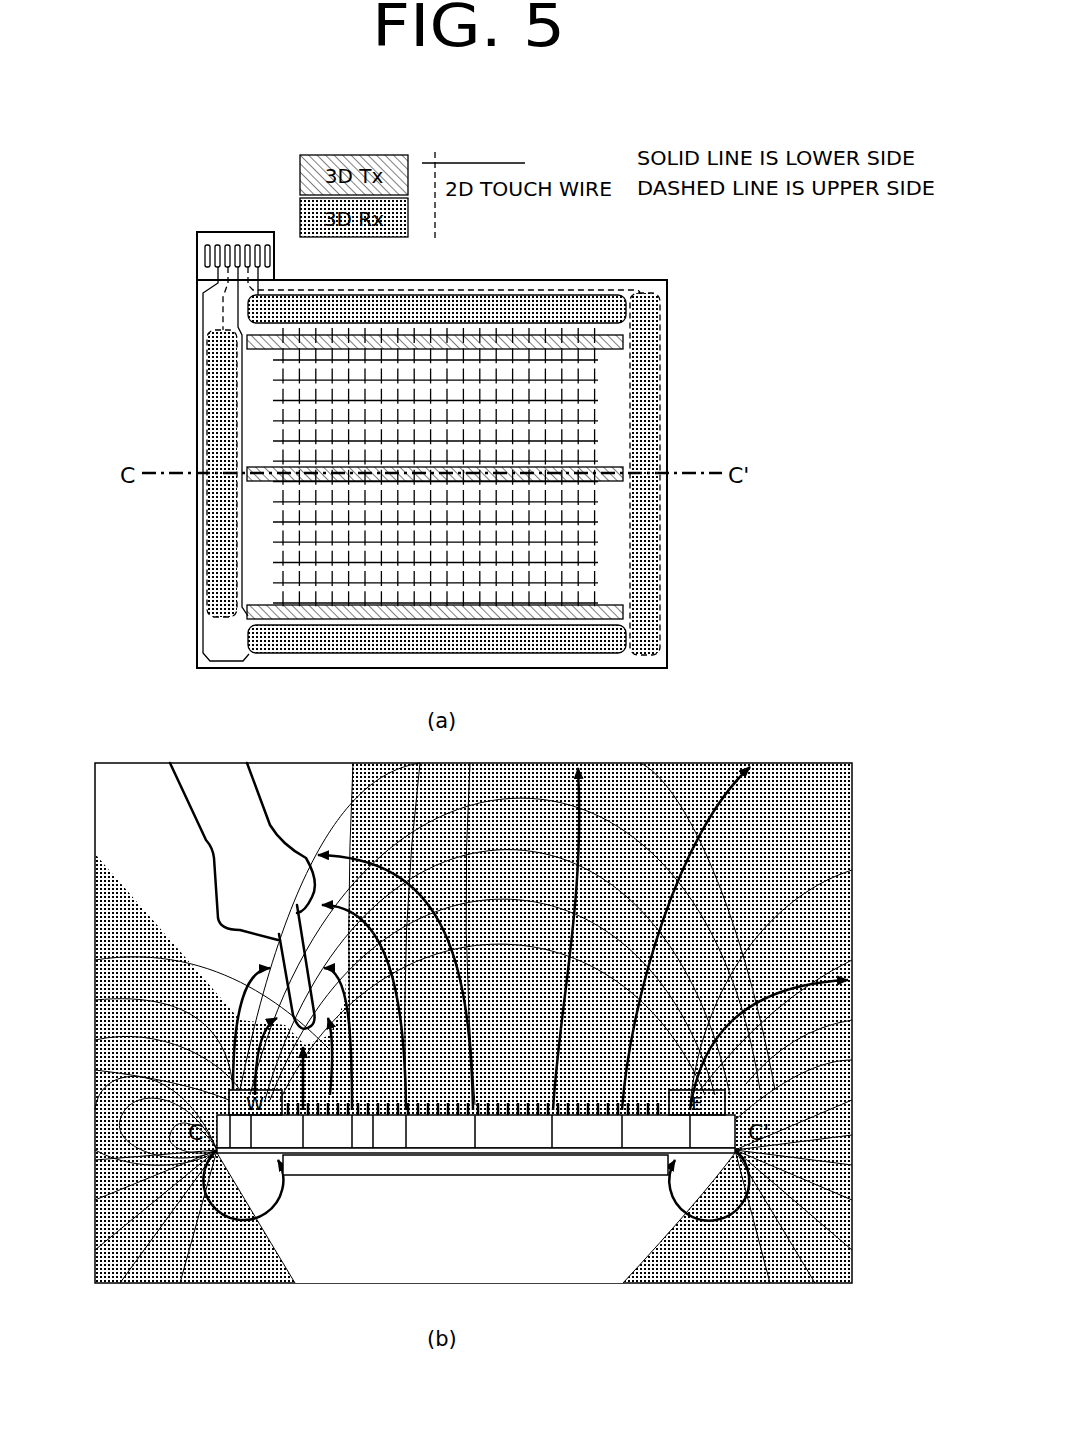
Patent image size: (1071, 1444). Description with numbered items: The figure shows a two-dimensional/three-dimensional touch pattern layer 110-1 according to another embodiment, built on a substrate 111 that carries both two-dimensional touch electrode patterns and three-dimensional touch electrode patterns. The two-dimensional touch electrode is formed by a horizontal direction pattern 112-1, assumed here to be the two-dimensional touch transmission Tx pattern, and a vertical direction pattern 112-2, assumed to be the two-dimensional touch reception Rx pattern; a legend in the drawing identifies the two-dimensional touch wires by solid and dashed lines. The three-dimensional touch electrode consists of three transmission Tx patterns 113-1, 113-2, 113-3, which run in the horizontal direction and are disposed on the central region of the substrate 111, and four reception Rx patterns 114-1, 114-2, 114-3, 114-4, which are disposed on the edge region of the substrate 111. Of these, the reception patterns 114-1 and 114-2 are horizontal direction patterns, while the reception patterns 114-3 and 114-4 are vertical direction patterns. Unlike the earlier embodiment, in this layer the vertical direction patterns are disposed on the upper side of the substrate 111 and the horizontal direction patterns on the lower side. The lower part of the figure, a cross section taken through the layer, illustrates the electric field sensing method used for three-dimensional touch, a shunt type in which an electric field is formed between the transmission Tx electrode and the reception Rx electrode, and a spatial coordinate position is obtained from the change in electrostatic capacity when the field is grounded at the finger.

The 2D/3D touch pattern layer 110-1 is at (485, 79).
The substrate 111 is at (667, 285).
The horizontal direction pattern of the 2D touch electrode 112-1 is at (470, 163).
The vertical direction pattern of the 2D touch electrode 112-2 is at (437, 225).
The transmission Tx pattern of the 3D touch electrode 113-1 is at (623, 341).
The transmission Tx pattern of the 3D touch electrode 113-2 is at (623, 476).
The transmission Tx pattern of the 3D touch electrode 113-3 is at (623, 612).
The reception Rx pattern of the 3D touch electrode 114-1 is at (570, 298).
The reception Rx pattern of the 3D touch electrode 114-2 is at (572, 655).
The reception Rx pattern of the 3D touch electrode 114-3 is at (652, 410).
The reception Rx pattern of the 3D touch electrode 114-4 is at (207, 412).